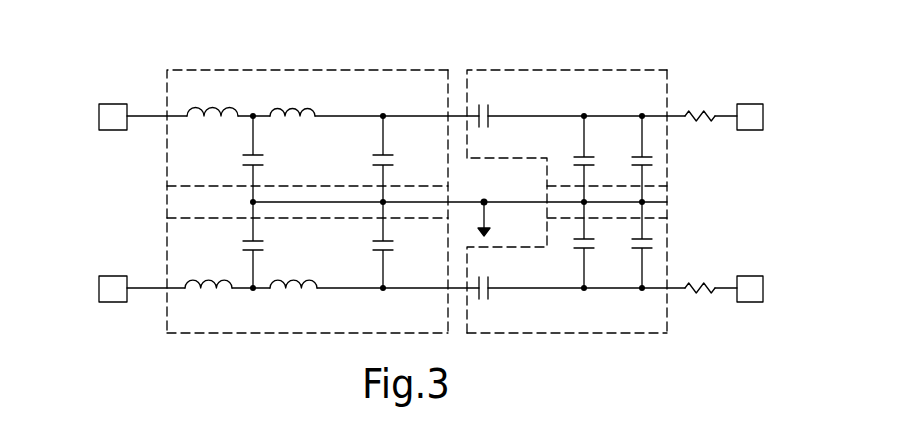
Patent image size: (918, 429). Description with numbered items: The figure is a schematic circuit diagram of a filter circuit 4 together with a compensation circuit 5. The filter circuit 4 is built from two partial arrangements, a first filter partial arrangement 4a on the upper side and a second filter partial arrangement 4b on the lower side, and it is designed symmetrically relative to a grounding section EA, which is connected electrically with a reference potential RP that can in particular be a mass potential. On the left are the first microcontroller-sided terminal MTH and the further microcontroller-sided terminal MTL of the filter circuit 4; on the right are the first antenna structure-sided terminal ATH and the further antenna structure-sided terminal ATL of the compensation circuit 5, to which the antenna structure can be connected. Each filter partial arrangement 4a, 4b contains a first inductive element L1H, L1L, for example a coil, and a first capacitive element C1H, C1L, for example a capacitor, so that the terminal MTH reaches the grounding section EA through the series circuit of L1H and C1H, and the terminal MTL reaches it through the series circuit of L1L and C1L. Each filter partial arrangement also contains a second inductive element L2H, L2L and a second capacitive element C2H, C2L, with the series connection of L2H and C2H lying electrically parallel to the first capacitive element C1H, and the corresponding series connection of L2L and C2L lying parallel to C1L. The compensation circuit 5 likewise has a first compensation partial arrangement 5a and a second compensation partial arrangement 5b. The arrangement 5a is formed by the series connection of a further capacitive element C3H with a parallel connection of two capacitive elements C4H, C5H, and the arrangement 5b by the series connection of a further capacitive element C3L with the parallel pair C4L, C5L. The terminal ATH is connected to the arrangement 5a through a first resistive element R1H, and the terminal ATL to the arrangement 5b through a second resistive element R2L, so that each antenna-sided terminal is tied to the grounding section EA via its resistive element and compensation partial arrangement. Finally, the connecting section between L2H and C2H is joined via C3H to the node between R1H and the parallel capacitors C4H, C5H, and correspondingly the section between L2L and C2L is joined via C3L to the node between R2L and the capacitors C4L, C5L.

The filter circuit 4 is at (183, 70).
The first filter partial arrangement 4a is at (437, 70).
The second filter partial arrangement 4b is at (167, 333).
The compensation circuit 5 is at (607, 70).
The first compensation partial arrangement 5a is at (667, 70).
The second compensation partial arrangement 5b is at (549, 333).
The first microcontroller-sided terminal MTH is at (108, 103).
The further microcontroller-sided terminal MTL is at (109, 275).
The first antenna structure-sided terminal ATH is at (743, 105).
The further antenna structure-sided terminal ATL is at (743, 277).
The first inductive element L1H is at (196, 109).
The second inductive element L2H is at (306, 109).
The first inductive element L1L is at (212, 292).
The second inductive element L2L is at (297, 292).
The first capacitive element C1H is at (258, 156).
The second capacitive element C2H is at (388, 156).
The further capacitive element C3H is at (487, 107).
The capacitive element C4H is at (578, 156).
The capacitive element C5H is at (638, 156).
The first capacitive element C1L is at (272, 227).
The second capacitive element C2L is at (402, 227).
The further capacitive element C3L is at (495, 275).
The capacitive element C4L is at (590, 241).
The capacitive element C5L is at (641, 248).
The first resistive element R1H is at (686, 112).
The second resistive element R2L is at (687, 283).
The grounding section EA is at (470, 201).
The reference potential RP is at (488, 232).